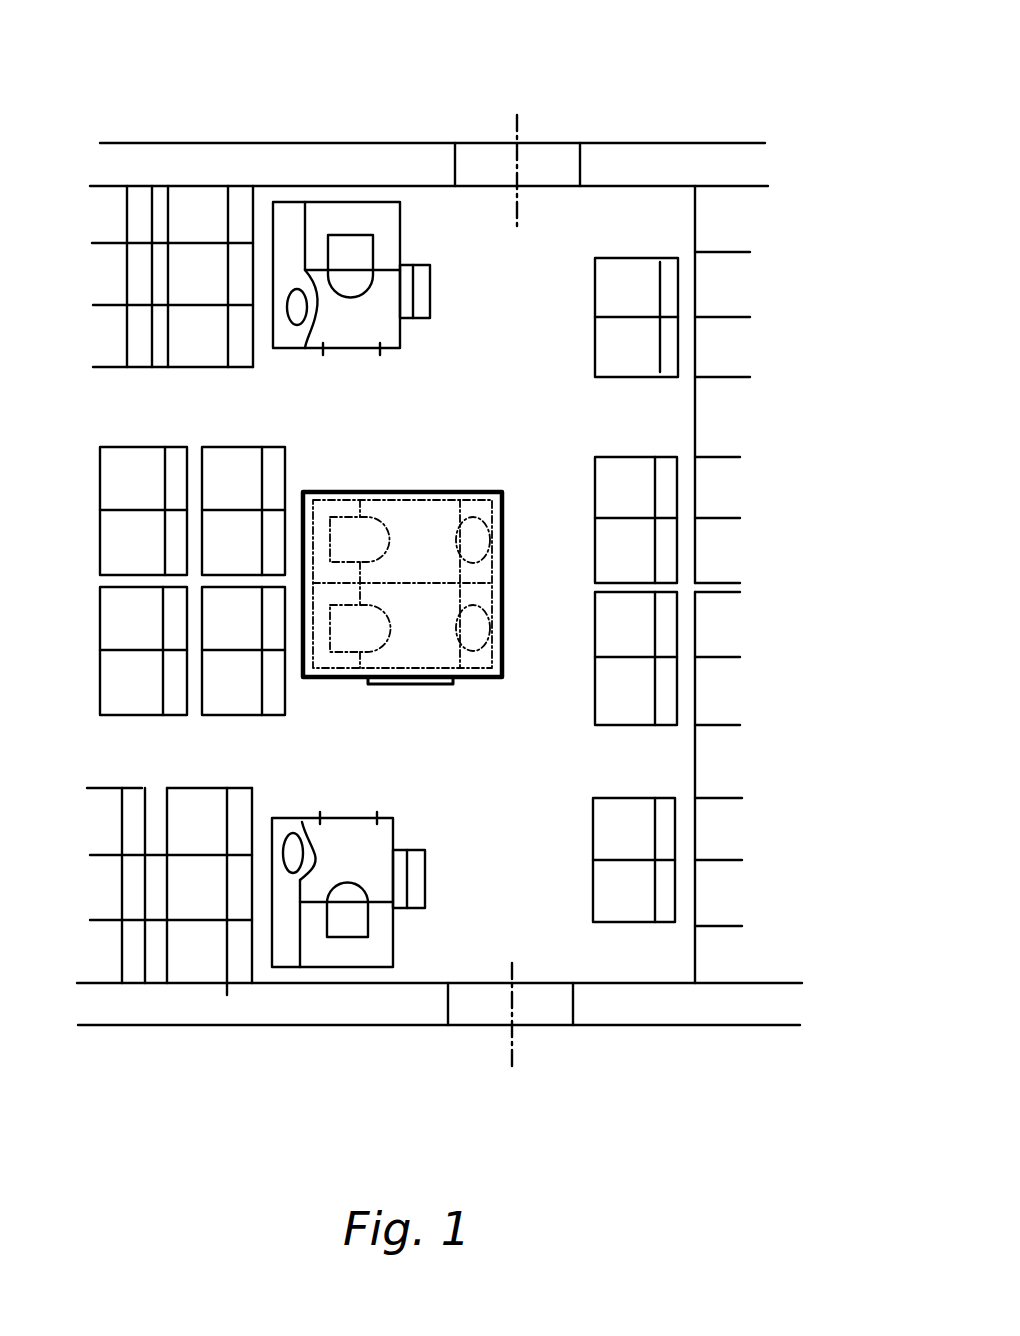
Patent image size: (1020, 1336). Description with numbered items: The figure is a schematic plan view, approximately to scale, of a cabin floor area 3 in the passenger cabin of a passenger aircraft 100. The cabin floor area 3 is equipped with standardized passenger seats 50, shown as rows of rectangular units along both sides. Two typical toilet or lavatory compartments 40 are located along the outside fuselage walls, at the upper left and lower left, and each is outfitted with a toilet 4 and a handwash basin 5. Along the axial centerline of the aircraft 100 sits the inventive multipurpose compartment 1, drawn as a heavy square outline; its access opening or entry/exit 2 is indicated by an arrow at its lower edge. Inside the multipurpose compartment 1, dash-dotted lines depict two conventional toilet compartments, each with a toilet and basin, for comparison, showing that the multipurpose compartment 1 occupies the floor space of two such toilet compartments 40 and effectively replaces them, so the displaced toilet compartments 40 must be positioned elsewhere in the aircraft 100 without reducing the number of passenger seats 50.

The passenger aircraft 100 is at (372, 85).
The multipurpose compartment 1 is at (402, 490).
The access opening or entry/exit 2 is at (412, 697).
The cabin floor area 3 is at (473, 823).
The toilet 4 is at (355, 258).
The handwash basin 5 is at (293, 312).
The toilet or lavatory compartment 40 is at (400, 214).
The passenger seats 50 is at (228, 460).